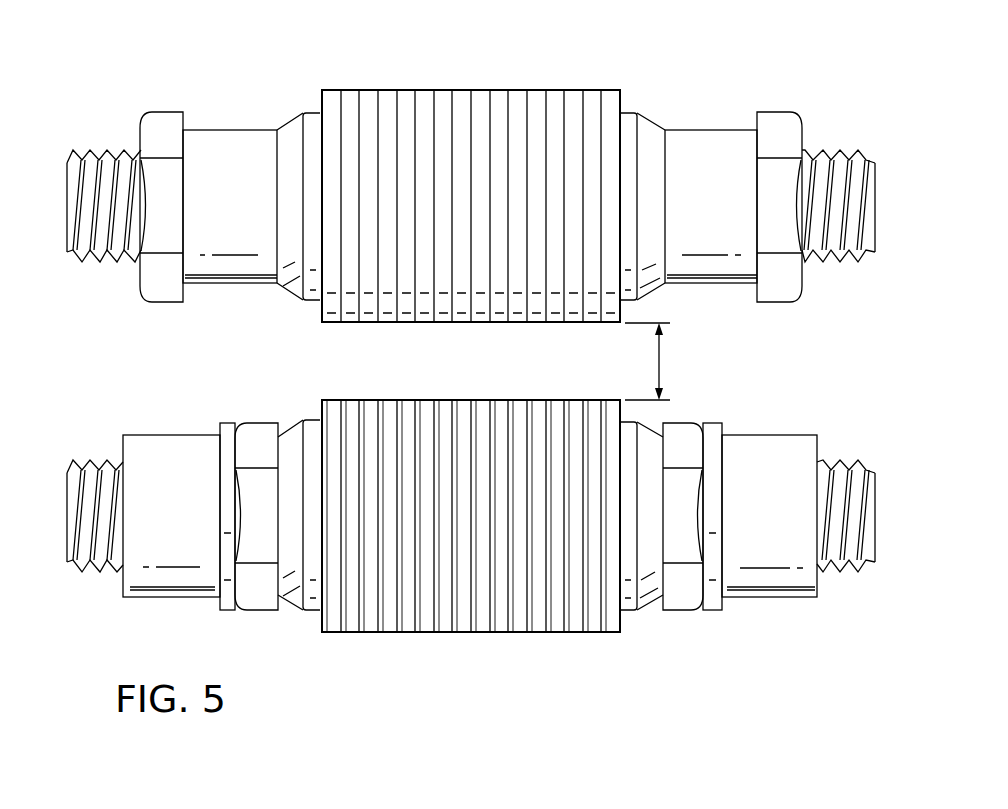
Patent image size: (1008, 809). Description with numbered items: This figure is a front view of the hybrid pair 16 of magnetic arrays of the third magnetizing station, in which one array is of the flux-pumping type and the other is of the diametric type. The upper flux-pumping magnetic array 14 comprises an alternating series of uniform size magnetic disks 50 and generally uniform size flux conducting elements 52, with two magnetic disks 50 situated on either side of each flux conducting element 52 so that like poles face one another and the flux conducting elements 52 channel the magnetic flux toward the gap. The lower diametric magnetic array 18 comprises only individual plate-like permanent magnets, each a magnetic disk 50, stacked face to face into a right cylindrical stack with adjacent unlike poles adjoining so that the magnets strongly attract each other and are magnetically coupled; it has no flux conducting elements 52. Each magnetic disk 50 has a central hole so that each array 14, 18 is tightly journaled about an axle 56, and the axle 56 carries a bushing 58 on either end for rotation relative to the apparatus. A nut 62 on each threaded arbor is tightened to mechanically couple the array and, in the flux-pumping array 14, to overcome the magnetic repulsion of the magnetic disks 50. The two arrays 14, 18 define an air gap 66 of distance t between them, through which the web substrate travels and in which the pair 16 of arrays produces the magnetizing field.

The flux-pumping magnetic array 14 is at (457, 664).
The pair of magnetic arrays 16 is at (56, 78).
The diametric magnetic array 18 is at (396, 60).
The magnetic disk 50 is at (515, 98).
The flux conducting element 52 is at (482, 624).
The axle 56 is at (98, 150).
The bushing 58 is at (232, 130).
The nut 62 is at (167, 112).
The air gap 66 is at (310, 325).